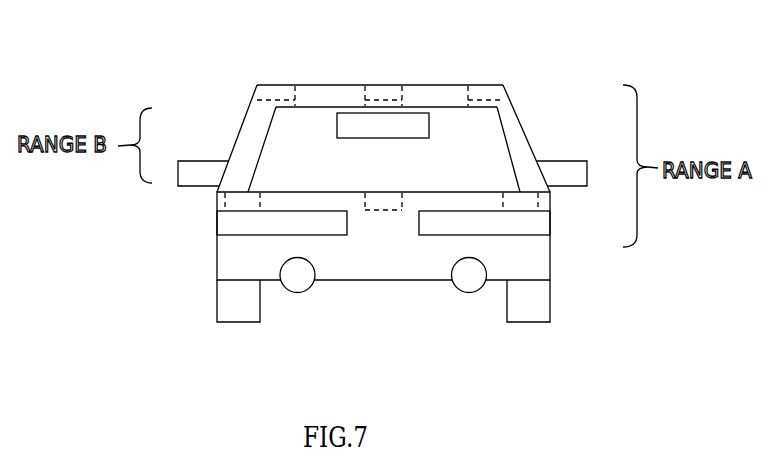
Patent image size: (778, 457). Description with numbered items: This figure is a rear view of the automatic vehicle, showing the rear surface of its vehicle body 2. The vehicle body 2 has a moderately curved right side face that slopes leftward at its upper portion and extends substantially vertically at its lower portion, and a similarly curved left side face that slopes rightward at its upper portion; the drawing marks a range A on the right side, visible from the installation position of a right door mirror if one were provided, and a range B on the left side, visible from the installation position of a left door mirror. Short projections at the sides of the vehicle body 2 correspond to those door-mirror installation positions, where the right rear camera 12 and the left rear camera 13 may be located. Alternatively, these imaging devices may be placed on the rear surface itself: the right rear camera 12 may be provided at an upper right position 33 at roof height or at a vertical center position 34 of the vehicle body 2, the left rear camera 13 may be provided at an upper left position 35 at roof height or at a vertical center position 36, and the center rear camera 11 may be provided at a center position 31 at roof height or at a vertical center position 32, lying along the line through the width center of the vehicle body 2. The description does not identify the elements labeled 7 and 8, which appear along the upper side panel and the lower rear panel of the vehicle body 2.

The vehicle body 2 is at (332, 97).
The upper vehicle body 7 is at (510, 118).
The lower vehicle body 8 is at (546, 202).
The center rear camera 11 is at (417, 127).
The right rear camera 12 is at (573, 160).
The left rear camera 13 is at (192, 158).
The center position 31 is at (384, 84).
The vertical center position 32 is at (380, 207).
The upper right position 33 is at (505, 80).
The vertical center position 34 is at (553, 232).
The upper left position 35 is at (255, 74).
The vertical center position 36 is at (240, 198).